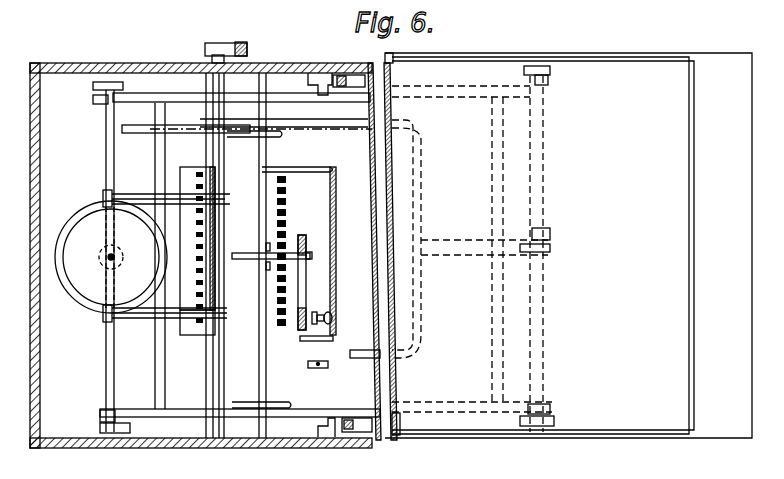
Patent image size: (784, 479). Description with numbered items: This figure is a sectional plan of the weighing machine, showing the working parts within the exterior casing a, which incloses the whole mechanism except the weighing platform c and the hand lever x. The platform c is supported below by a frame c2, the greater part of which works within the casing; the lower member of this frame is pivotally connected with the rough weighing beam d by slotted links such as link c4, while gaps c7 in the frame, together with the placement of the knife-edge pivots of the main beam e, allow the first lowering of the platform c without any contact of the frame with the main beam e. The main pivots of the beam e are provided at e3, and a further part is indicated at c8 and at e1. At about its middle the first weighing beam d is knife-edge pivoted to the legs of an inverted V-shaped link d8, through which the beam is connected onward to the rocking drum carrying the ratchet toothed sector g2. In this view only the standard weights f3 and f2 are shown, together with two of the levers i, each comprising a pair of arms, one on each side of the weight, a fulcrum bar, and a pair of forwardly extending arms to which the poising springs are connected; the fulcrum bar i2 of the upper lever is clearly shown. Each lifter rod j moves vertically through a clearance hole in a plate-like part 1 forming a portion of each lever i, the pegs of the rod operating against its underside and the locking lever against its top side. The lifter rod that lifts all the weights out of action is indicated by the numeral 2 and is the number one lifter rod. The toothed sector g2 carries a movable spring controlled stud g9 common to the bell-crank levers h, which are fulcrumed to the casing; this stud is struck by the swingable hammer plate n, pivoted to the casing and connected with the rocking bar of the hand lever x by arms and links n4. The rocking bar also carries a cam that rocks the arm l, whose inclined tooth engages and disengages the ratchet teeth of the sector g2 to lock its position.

The exterior casing a is at (311, 240).
The weighing platform c is at (568, 245).
The platform frame c2 is at (545, 210).
The slotted link c4 is at (389, 53).
The gap in frame c7 is at (343, 78).
The door catch c8 is at (356, 433).
The rough weighing beam d is at (452, 243).
The inverted V-shaped link d8 is at (318, 369).
The main weighing beam e is at (132, 97).
The lower cross bar e1 is at (160, 418).
The main pivots of beam e3 is at (320, 82).
The hand lever x is at (241, 42).
The eight pound standard weight f2 is at (80, 212).
The four pound standard weight f3 is at (87, 290).
The weight poising lever i is at (125, 203).
The fulcrum bar i2 is at (226, 199).
The arm l is at (238, 257).
The lifter rod j is at (194, 216).
The plate-like part of lever 1 is at (158, 316).
The number one lifter rod 2 is at (196, 325).
The hammer plate n is at (335, 195).
The link n4 is at (308, 167).
The bell-crank lever h is at (277, 279).
The ratchet toothed sector g2 is at (306, 270).
The spring controlled stud g9 is at (330, 318).